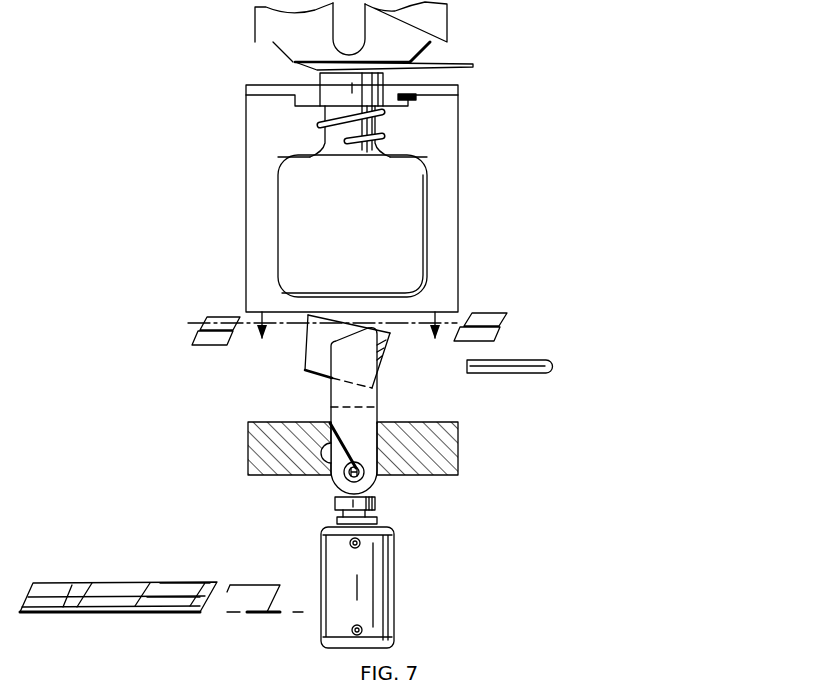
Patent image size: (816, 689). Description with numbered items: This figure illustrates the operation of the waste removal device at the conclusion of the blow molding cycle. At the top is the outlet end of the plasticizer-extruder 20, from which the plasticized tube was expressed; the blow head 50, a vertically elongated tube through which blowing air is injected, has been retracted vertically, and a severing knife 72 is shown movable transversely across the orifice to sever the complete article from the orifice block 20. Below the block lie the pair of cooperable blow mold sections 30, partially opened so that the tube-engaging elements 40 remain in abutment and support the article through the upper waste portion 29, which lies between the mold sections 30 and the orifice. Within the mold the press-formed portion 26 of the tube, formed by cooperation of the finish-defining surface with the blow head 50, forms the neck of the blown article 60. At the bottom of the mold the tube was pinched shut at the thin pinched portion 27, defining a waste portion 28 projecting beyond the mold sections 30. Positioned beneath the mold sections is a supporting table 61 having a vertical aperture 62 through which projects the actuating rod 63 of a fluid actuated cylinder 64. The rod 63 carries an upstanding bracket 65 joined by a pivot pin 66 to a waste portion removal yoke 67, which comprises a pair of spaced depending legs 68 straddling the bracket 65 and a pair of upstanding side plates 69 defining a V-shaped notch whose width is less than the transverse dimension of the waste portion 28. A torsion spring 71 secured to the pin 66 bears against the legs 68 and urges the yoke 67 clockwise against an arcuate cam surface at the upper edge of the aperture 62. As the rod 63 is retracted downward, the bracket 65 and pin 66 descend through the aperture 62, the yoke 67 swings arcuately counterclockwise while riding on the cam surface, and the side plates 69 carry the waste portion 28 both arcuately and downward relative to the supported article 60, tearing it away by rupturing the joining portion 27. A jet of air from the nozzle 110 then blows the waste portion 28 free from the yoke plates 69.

The outlet end of plasticizer-extruder 20 is at (455, 20).
The blow head 50 is at (330, 23).
The severing knife 72 is at (463, 63).
The upper waste portion 29 is at (318, 76).
The tube-engaging elements 40 is at (400, 97).
The press-formed portion of the tube 26 is at (335, 113).
The blow mold sections 30 is at (470, 138).
The article 60 is at (413, 230).
The pinched portion 27 is at (323, 320).
The waste portion 28 is at (317, 350).
The upstanding side plates 69 is at (360, 352).
The waste portion removal yoke 67 is at (384, 378).
The depending legs 68 is at (356, 428).
The torsion spring 71 is at (331, 408).
The supporting table 61 is at (443, 434).
The vertical aperture 62 is at (313, 463).
The pivot pin 66 is at (345, 478).
The upstanding bracket 65 is at (373, 502).
The actuating rod 63 is at (367, 515).
The fluid actuated cylinder 64 is at (378, 581).
The nozzle 110 is at (518, 365).